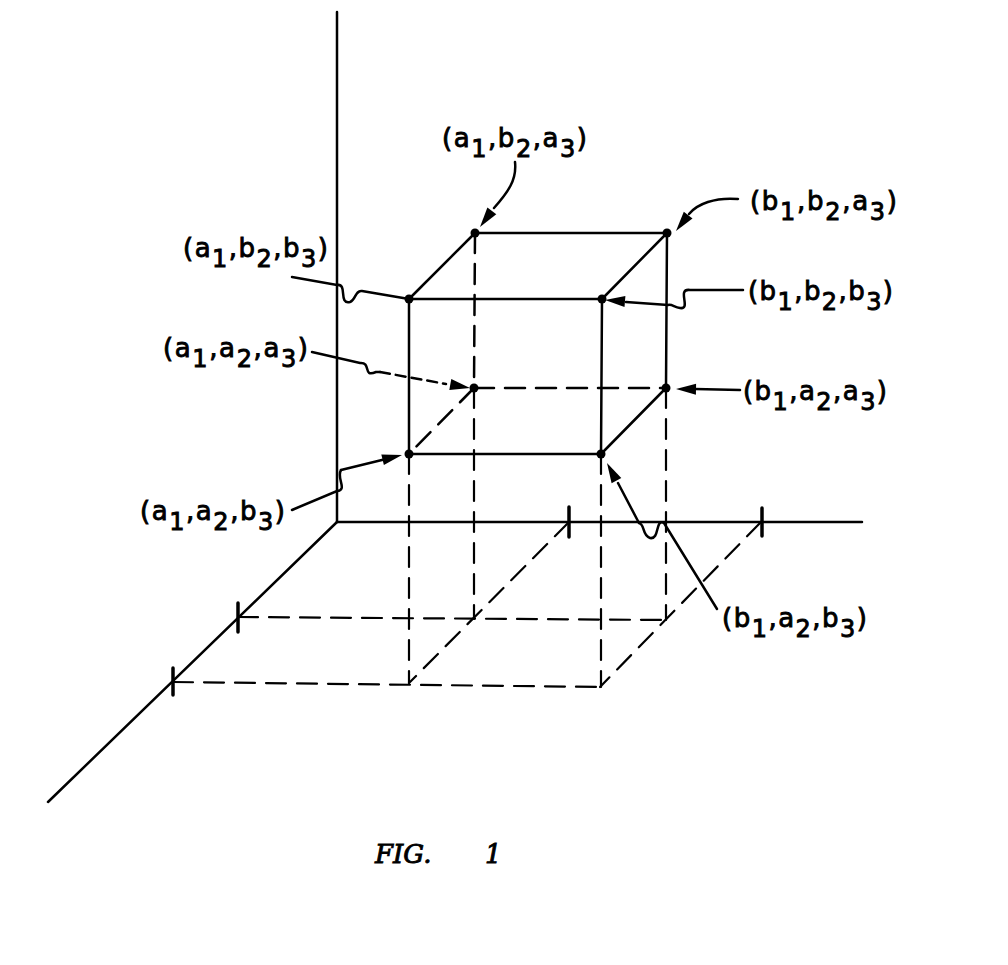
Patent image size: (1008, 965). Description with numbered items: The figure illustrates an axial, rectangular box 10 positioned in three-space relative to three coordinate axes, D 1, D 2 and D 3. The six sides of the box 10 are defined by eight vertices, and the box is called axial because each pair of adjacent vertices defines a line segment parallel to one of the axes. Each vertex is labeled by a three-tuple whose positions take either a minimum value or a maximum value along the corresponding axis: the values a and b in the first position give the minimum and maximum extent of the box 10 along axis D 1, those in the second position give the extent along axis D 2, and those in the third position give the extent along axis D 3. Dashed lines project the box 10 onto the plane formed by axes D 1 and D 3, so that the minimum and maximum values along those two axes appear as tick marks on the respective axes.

The box 10 is at (618, 207).
The first dimension axis D1 1 is at (612, 507).
The second dimension axis D2 2 is at (362, 267).
The third dimension axis D3 3 is at (192, 662).